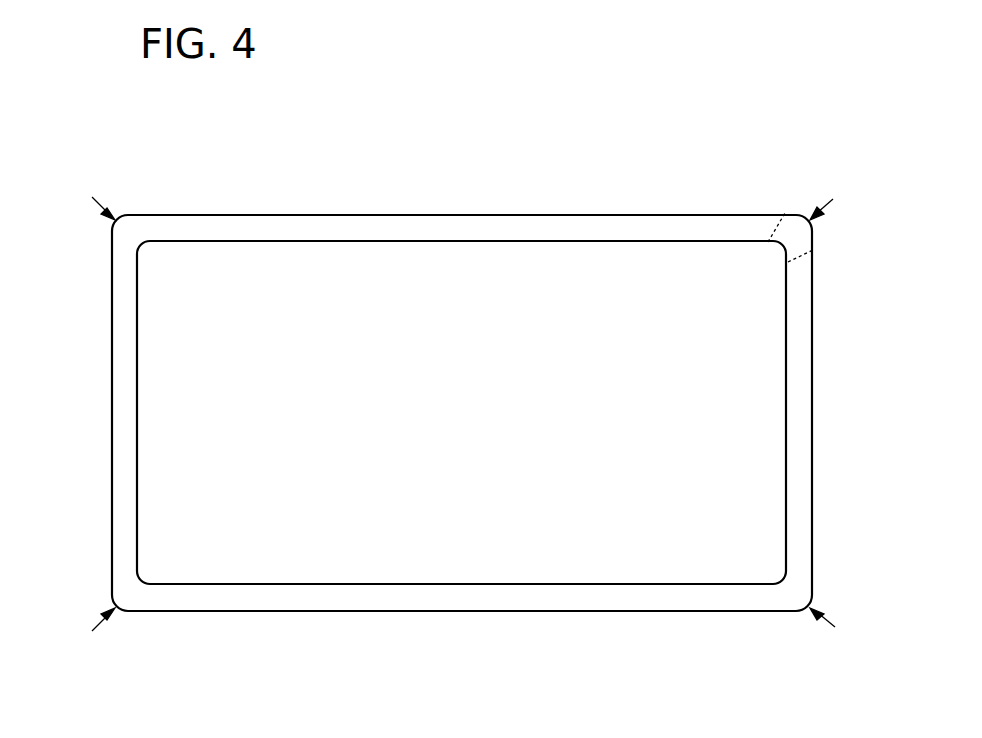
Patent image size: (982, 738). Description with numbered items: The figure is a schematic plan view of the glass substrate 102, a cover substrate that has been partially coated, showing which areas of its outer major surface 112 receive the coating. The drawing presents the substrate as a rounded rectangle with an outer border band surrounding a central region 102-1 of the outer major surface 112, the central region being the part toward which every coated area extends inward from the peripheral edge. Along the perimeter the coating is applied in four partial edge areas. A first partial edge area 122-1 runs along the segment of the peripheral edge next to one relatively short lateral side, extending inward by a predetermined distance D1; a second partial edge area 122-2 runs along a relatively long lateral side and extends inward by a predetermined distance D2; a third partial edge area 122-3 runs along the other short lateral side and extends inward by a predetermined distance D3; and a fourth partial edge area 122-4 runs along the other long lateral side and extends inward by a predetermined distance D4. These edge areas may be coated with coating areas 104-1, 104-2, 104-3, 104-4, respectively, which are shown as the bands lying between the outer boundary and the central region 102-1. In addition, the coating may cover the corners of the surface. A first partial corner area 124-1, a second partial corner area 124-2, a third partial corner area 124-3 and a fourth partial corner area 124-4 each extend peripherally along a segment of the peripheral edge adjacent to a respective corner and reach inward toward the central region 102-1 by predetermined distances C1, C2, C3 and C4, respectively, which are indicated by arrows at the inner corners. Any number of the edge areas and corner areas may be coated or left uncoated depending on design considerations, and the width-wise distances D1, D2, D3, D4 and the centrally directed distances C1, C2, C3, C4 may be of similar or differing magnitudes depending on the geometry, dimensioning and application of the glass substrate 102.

The glass substrate 102 is at (201, 120).
The central region 102-1 is at (468, 398).
The first coating area 104-1 is at (800, 423).
The second coating area 104-2 is at (547, 232).
The third coating area 104-3 is at (127, 408).
The fourth coating area 104-4 is at (500, 602).
The outer major surface 112 is at (580, 472).
The first partial edge area 122-1 is at (838, 572).
The second partial edge area 122-2 is at (146, 189).
The third partial edge area 122-3 is at (88, 577).
The fourth partial edge area 122-4 is at (146, 629).
The first partial corner area 124-1 is at (797, 247).
The second partial corner area 124-2 is at (122, 237).
The third partial corner area 124-3 is at (138, 597).
The fourth partial corner area 124-4 is at (790, 587).
The predetermined distance C1 is at (773, 257).
The predetermined distance C2 is at (152, 253).
The predetermined distance C3 is at (153, 568).
The predetermined distance C4 is at (776, 570).
The predetermined distance D1 is at (858, 476).
The predetermined distance D2 is at (252, 175).
The predetermined distance D3 is at (73, 479).
The predetermined distance D4 is at (343, 637).